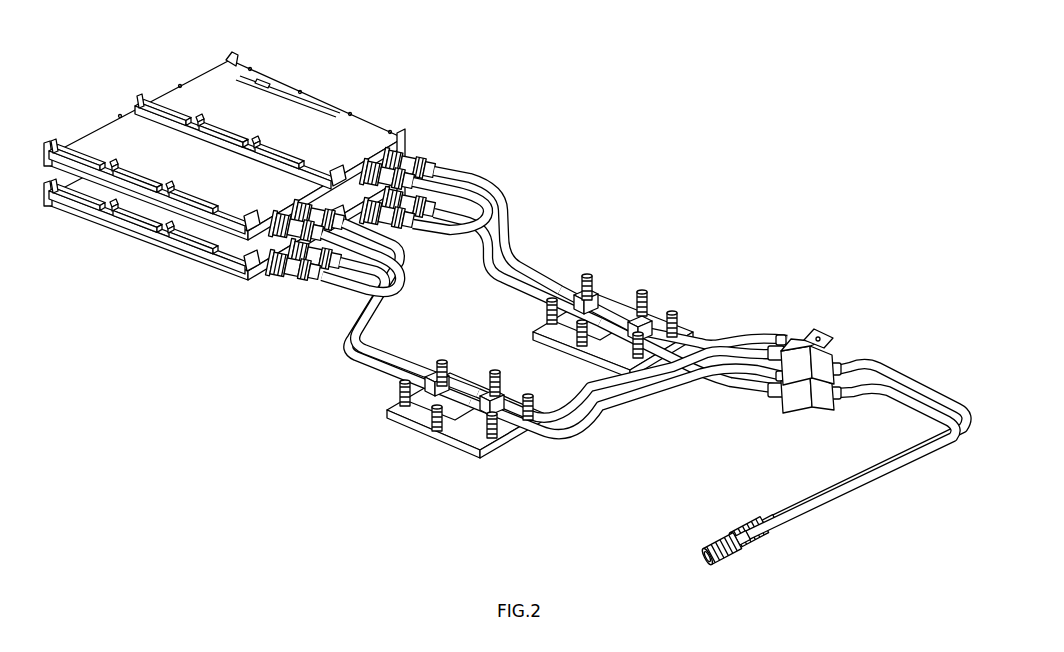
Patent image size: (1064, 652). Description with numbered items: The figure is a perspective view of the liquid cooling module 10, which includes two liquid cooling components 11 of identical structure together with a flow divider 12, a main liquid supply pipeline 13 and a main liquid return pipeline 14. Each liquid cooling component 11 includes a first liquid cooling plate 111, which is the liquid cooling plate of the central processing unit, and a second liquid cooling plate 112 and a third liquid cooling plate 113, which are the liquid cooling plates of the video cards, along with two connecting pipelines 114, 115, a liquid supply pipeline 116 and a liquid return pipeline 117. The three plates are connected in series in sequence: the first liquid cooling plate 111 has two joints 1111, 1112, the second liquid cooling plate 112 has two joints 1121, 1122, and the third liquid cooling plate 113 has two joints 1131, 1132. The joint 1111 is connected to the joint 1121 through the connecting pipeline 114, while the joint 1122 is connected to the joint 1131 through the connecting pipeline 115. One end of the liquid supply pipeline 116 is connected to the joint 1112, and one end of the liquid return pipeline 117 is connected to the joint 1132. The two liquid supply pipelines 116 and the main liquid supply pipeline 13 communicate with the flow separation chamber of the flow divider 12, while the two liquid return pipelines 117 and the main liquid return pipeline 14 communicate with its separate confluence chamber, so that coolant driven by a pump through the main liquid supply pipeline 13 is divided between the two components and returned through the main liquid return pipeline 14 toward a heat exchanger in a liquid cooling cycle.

The liquid cooling module 10 is at (133, 49).
The liquid cooling component 11 is at (493, 179).
The first liquid cooling plate 111 is at (563, 342).
The joint 1111 is at (593, 302).
The joint 1112 is at (621, 297).
The second liquid cooling plate 112 is at (327, 203).
The third liquid cooling plate 113 is at (123, 143).
The joint 1131 is at (370, 160).
The joint 1132 is at (404, 138).
The joint 1121 is at (397, 240).
The joint 1122 is at (424, 185).
The connecting pipeline 114 is at (486, 266).
The connecting pipeline 115 is at (479, 212).
The liquid supply pipeline 116 is at (708, 337).
The liquid return pipeline 117 is at (499, 258).
The flow divider 12 is at (819, 333).
The main liquid supply pipeline 13 is at (919, 386).
The main liquid return pipeline 14 is at (906, 401).